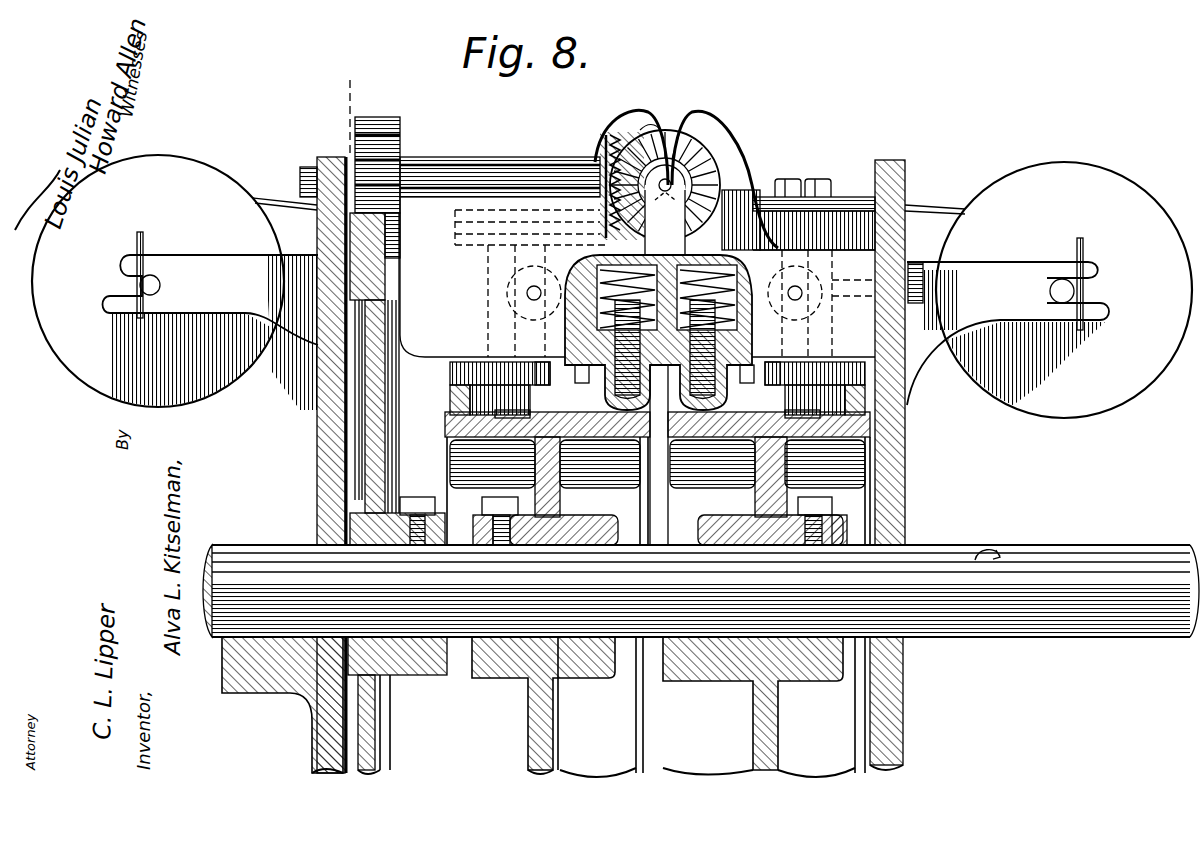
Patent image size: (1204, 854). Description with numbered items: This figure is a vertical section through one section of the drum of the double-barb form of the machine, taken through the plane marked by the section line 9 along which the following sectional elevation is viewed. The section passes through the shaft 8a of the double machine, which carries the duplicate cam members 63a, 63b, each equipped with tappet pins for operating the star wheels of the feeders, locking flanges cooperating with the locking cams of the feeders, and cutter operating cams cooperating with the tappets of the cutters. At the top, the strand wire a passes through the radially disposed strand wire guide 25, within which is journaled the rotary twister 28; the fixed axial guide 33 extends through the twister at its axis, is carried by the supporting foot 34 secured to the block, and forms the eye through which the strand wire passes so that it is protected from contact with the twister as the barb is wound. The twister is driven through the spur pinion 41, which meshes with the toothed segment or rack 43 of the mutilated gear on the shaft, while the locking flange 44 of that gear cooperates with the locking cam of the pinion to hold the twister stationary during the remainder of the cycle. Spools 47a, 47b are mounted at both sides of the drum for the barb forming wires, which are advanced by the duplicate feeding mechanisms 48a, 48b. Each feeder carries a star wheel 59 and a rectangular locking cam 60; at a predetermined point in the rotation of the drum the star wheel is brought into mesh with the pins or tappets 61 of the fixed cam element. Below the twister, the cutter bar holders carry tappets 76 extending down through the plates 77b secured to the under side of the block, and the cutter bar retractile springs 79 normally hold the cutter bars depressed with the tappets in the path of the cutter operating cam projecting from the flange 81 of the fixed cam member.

The section line 9— 9 is at (360, 96).
The spool 47a is at (175, 287).
The spool 47b is at (1049, 291).
The rod c is at (940, 206).
The locking flange 44 is at (322, 240).
The spur pinion 41 is at (373, 117).
The toothed segment or rack 43 is at (378, 256).
The feeding mechanism 48a is at (510, 198).
The feeding mechanism 48b is at (820, 212).
The rotary twister 28 is at (722, 183).
The fixed axial guide 33 is at (712, 162).
The strand wire guide 25 is at (693, 118).
The strand wire a is at (665, 217).
The supporting foot 34 is at (741, 220).
The cutter bar retractile spring 79 is at (600, 284).
The plate 77b is at (610, 322).
The tappet 76 is at (665, 455).
The pins or tappets 61 is at (452, 374).
The locking cam 60 is at (452, 402).
The star wheel 59 is at (548, 386).
The flange 81 is at (780, 398).
The shaft 8a is at (701, 591).
The cam member 63a is at (556, 720).
The cam member 63b is at (755, 720).